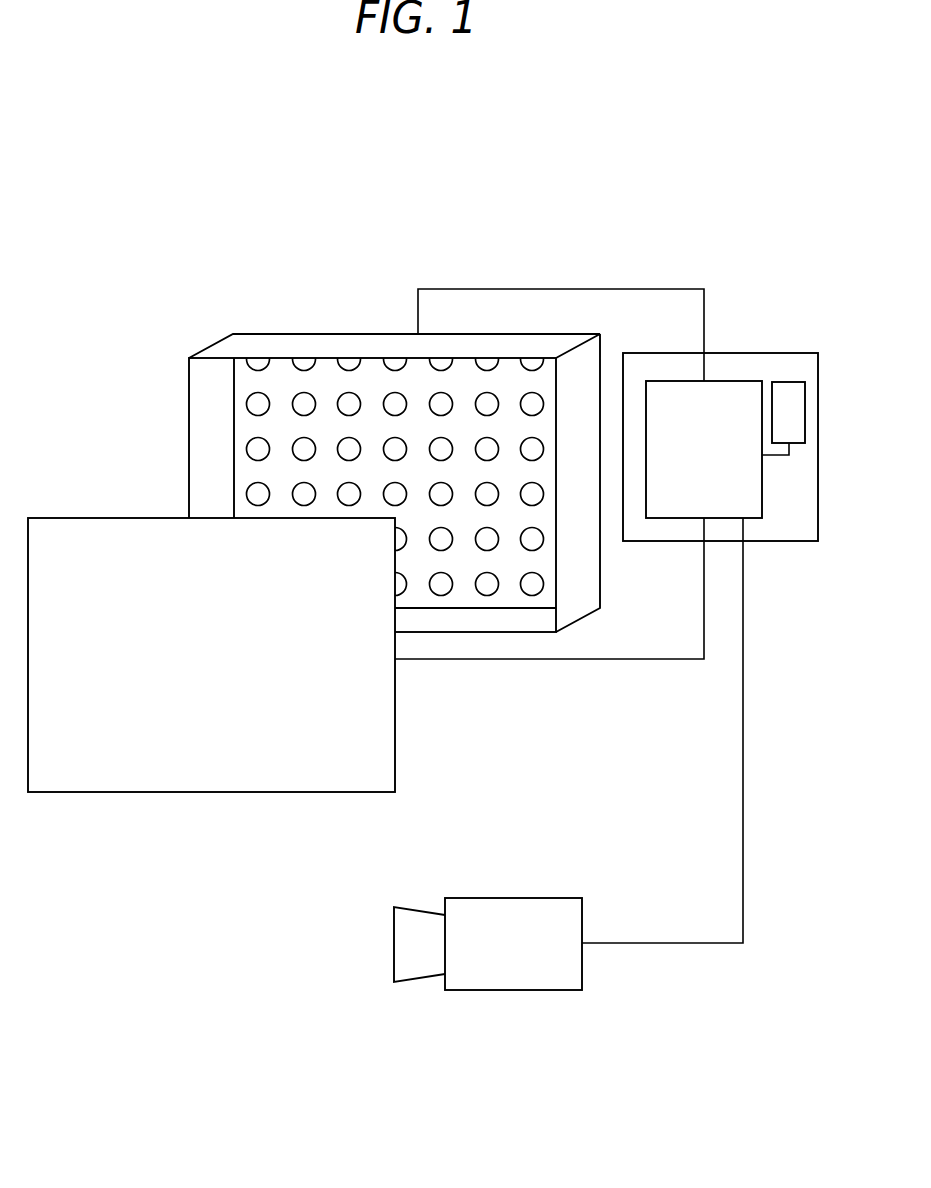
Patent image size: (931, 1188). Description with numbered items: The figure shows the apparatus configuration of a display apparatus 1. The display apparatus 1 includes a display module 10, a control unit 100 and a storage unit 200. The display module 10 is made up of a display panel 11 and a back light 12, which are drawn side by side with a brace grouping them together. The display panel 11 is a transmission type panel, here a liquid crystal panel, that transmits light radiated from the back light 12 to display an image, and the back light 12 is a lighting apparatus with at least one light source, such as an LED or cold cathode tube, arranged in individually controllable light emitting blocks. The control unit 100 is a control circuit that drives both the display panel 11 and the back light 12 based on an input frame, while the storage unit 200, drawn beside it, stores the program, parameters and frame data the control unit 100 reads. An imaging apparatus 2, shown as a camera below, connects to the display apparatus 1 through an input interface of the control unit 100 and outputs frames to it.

The display apparatus 1 is at (103, 121).
The display module 10 is at (383, 200).
The display panel 11 is at (88, 517).
The back light 12 is at (350, 334).
The control unit 100 is at (730, 378).
The storage unit 200 is at (782, 382).
The imaging apparatus 2 is at (525, 990).